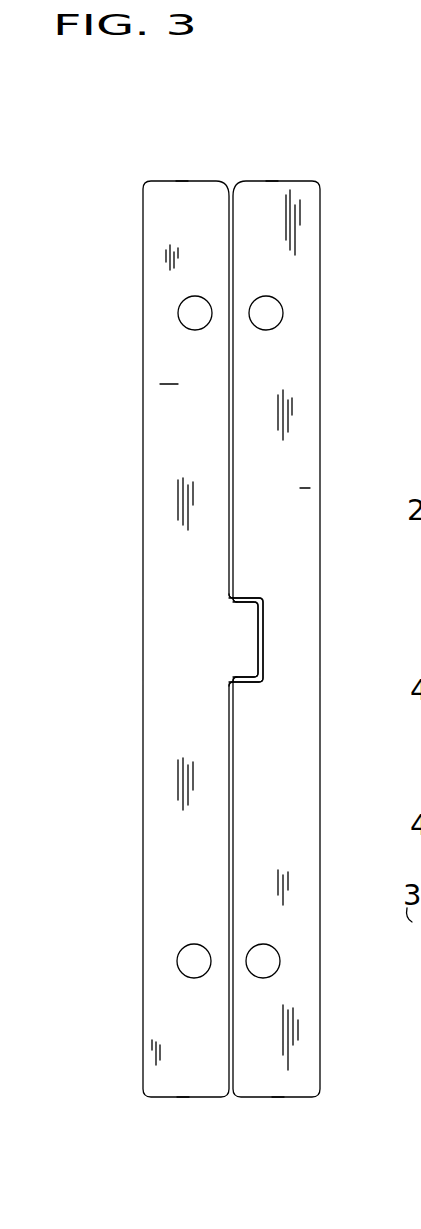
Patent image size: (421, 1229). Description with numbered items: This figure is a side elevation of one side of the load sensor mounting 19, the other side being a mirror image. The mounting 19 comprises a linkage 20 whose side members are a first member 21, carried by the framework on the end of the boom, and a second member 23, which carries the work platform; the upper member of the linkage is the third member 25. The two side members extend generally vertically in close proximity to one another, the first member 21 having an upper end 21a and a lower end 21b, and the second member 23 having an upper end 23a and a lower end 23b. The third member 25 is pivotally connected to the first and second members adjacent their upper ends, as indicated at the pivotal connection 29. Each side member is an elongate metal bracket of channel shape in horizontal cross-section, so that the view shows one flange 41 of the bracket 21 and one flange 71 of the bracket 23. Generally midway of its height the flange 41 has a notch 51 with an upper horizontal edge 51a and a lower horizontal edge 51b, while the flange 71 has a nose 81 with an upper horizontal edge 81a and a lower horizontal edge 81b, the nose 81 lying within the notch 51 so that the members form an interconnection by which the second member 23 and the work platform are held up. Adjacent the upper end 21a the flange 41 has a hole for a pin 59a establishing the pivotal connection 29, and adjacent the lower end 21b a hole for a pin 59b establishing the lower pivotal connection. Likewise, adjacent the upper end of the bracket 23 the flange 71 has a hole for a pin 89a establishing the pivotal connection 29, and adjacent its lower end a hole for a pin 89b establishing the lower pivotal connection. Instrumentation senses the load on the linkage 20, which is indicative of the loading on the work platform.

The load sensor mounting 19 is at (135, 207).
The linkage 20 is at (232, 172).
The first member 21 is at (330, 547).
The upper end of first member 21a is at (272, 180).
The lower end of first member 21b is at (278, 1097).
The second member 23 is at (137, 535).
The upper end of second member 23a is at (182, 180).
The lower end of second member 23b is at (183, 1097).
The third member 25 is at (408, 408).
The pivotal connection 29 is at (420, 340).
The flange 41 is at (305, 488).
The notch 51 is at (268, 645).
The upper horizontal edge of notch 51a is at (250, 598).
The lower horizontal edge of notch 51b is at (248, 687).
The pin 59a is at (268, 312).
The pin 59b is at (267, 963).
The flange 71 is at (175, 385).
The nose 81 is at (248, 637).
The upper horizontal edge of nose 81a is at (243, 603).
The lower horizontal edge of nose 81b is at (245, 672).
The pin 89a is at (193, 315).
The pin 89b is at (190, 963).